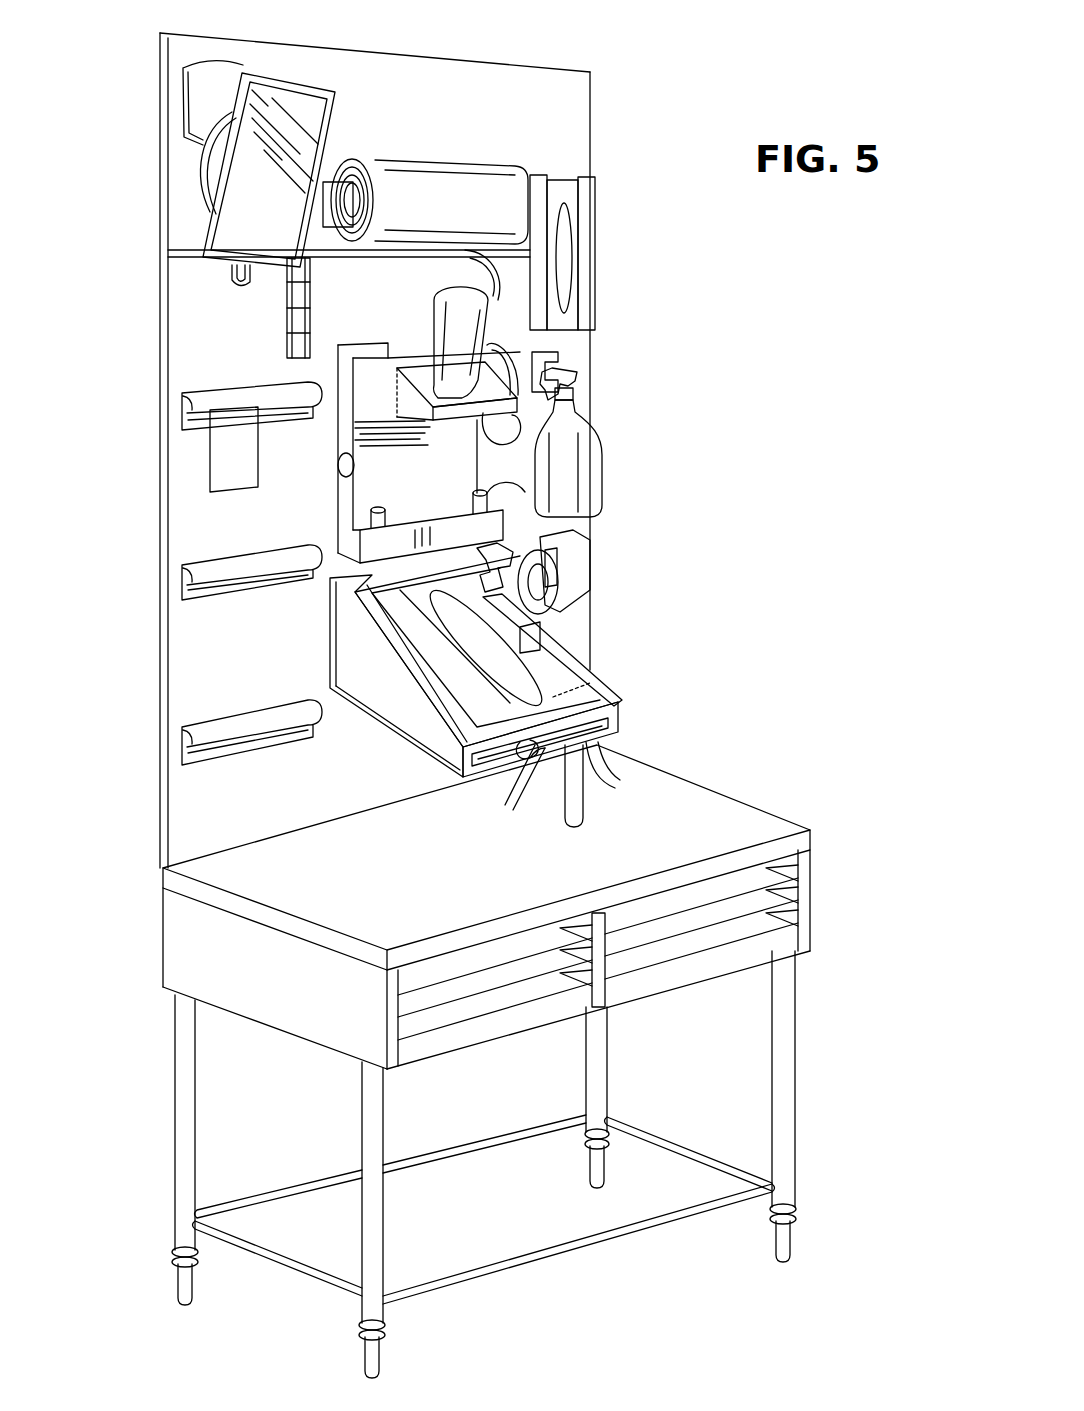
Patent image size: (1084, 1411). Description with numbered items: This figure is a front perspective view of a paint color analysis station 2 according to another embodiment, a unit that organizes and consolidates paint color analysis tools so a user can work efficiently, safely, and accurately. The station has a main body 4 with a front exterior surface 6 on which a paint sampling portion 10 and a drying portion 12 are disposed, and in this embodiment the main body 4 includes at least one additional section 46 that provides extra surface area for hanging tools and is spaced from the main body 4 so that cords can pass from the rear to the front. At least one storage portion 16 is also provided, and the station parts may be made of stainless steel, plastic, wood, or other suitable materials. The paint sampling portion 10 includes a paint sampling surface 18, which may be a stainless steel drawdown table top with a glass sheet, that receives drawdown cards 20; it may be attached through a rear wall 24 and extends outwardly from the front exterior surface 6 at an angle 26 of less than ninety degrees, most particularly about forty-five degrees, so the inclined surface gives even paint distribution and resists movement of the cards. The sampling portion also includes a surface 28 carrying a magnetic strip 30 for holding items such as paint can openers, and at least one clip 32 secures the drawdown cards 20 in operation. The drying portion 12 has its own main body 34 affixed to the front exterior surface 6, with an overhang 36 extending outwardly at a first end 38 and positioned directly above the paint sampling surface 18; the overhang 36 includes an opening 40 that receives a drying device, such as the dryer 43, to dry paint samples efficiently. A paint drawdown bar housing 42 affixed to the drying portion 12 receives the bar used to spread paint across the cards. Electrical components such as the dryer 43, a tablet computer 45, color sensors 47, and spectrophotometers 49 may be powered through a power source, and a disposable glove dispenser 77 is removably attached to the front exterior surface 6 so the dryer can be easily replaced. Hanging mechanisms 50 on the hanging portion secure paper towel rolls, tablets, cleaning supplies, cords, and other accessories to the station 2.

The paint color analysis station 2 is at (665, 92).
The main body 4 is at (190, 806).
The front exterior surface 6 is at (572, 145).
The paint sampling portion 10 is at (455, 742).
The drying portion 12 is at (465, 462).
The storage portion 16 is at (372, 150).
The paint sampling surface 18 is at (600, 697).
The drawdown cards 20 is at (547, 663).
The rear wall 24 is at (330, 620).
The angle 26 is at (397, 404).
The surface 28 is at (472, 778).
The magnetic strip 30 is at (612, 786).
The clip 32 is at (550, 613).
The main body of the drying portion 34 is at (367, 438).
The overhang 36 is at (503, 408).
The first end 38 is at (372, 347).
The opening 40 is at (450, 423).
The paint drawdown bar housing 42 is at (370, 545).
The dryer 43 is at (290, 82).
The tablet computer 45 is at (465, 290).
The additional section 46 is at (547, 101).
The color sensors 47 is at (525, 492).
The spectrophotometers 49 is at (380, 508).
The hanging mechanisms 50 is at (200, 97).
The disposable glove dispenser 77 is at (587, 205).